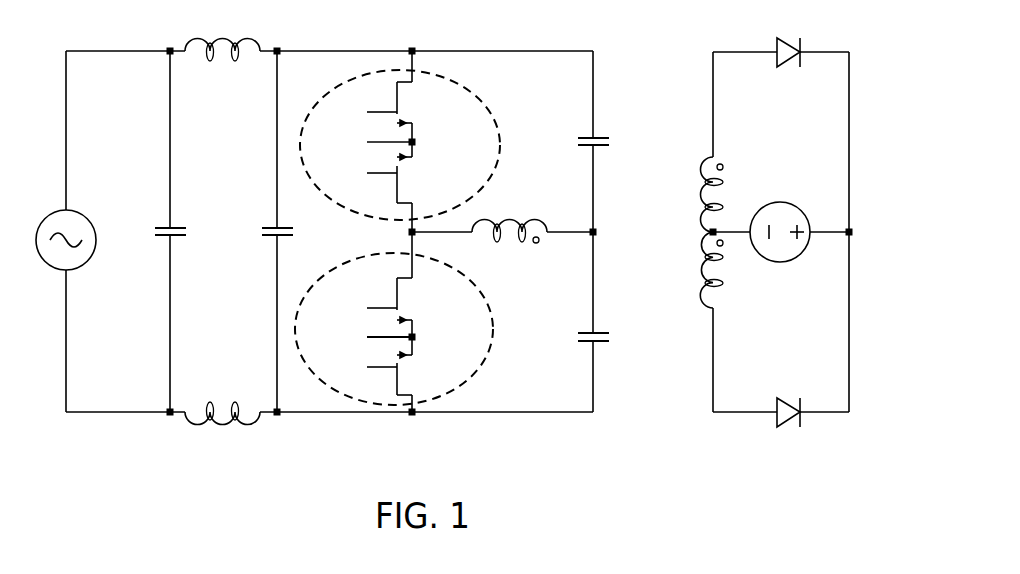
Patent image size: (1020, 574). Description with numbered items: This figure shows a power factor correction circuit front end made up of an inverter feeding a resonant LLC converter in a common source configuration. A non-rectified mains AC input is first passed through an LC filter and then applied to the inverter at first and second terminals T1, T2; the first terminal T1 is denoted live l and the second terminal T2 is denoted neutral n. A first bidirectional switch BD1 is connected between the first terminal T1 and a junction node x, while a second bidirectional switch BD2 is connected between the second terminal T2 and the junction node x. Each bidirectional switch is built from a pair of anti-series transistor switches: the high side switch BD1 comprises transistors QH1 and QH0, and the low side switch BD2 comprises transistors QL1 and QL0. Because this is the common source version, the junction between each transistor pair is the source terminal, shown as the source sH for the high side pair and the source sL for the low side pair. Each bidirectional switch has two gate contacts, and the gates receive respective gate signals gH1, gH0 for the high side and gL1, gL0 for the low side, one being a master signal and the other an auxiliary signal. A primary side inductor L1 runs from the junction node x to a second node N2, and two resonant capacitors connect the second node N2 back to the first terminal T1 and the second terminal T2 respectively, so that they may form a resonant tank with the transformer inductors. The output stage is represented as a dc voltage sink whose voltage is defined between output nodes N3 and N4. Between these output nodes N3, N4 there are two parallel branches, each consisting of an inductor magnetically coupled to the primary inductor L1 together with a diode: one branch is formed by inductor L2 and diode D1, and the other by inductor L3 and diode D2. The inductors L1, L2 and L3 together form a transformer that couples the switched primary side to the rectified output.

The first terminal T1 is at (287, 36).
The second terminal T2 is at (282, 430).
The first bidirectional switch BD1 is at (396, 144).
The second bidirectional switch BD2 is at (394, 323).
The transistor QH1 is at (431, 104).
The transistor QH0 is at (432, 178).
The gate signal gH1 is at (360, 111).
The gate signal gH0 is at (360, 171).
The source voltage sH is at (377, 141).
The transistor QL1 is at (431, 301).
The transistor QL0 is at (432, 373).
The gate signal gL1 is at (362, 308).
The gate signal gL0 is at (362, 368).
The source terminal sL is at (378, 338).
The junction node x is at (428, 232).
The live l is at (450, 41).
The neutral n is at (452, 402).
The primary side inductor L1 is at (532, 218).
The second node N2 is at (615, 227).
The diode D1 is at (788, 38).
The diode D2 is at (788, 400).
The inductor L2 is at (695, 194).
The inductor L3 is at (695, 270).
The output node N3 is at (693, 226).
The output node N4 is at (867, 227).